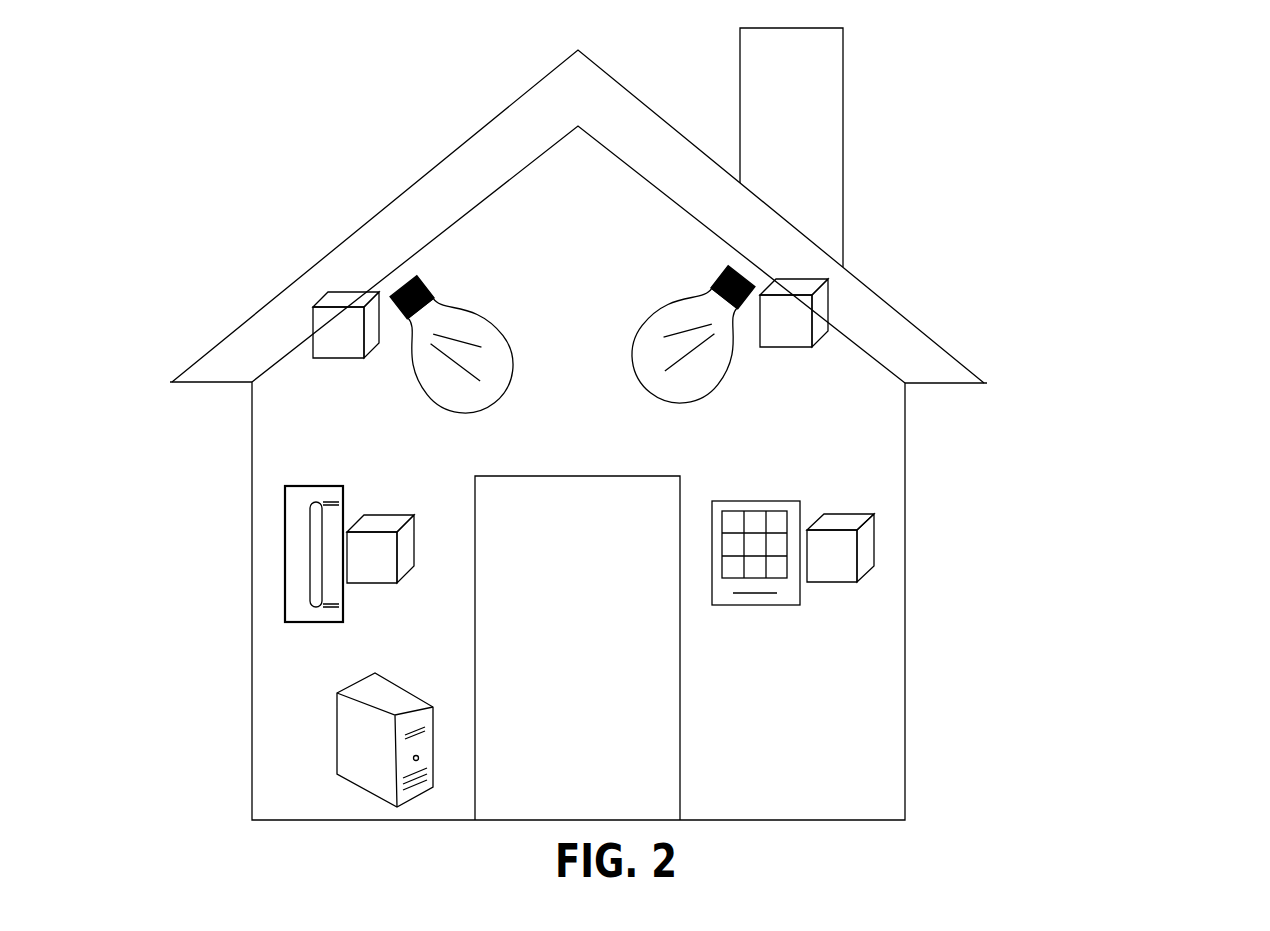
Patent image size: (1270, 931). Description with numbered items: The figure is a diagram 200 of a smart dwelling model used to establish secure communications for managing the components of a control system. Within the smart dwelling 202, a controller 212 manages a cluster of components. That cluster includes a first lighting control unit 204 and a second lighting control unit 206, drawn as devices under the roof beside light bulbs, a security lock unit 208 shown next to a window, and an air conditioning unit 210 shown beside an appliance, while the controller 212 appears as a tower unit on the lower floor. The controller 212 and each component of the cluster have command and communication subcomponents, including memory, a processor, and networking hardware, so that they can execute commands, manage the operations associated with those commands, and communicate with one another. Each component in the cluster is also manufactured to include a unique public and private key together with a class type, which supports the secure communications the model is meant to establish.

The diagram 200 is at (1062, 68).
The smart dwelling 202 is at (618, 64).
The first lighting control unit 204 is at (806, 267).
The second lighting control unit 206 is at (337, 283).
The security lock unit 208 is at (852, 506).
The air conditioning unit 210 is at (376, 510).
The controller 212 is at (366, 672).